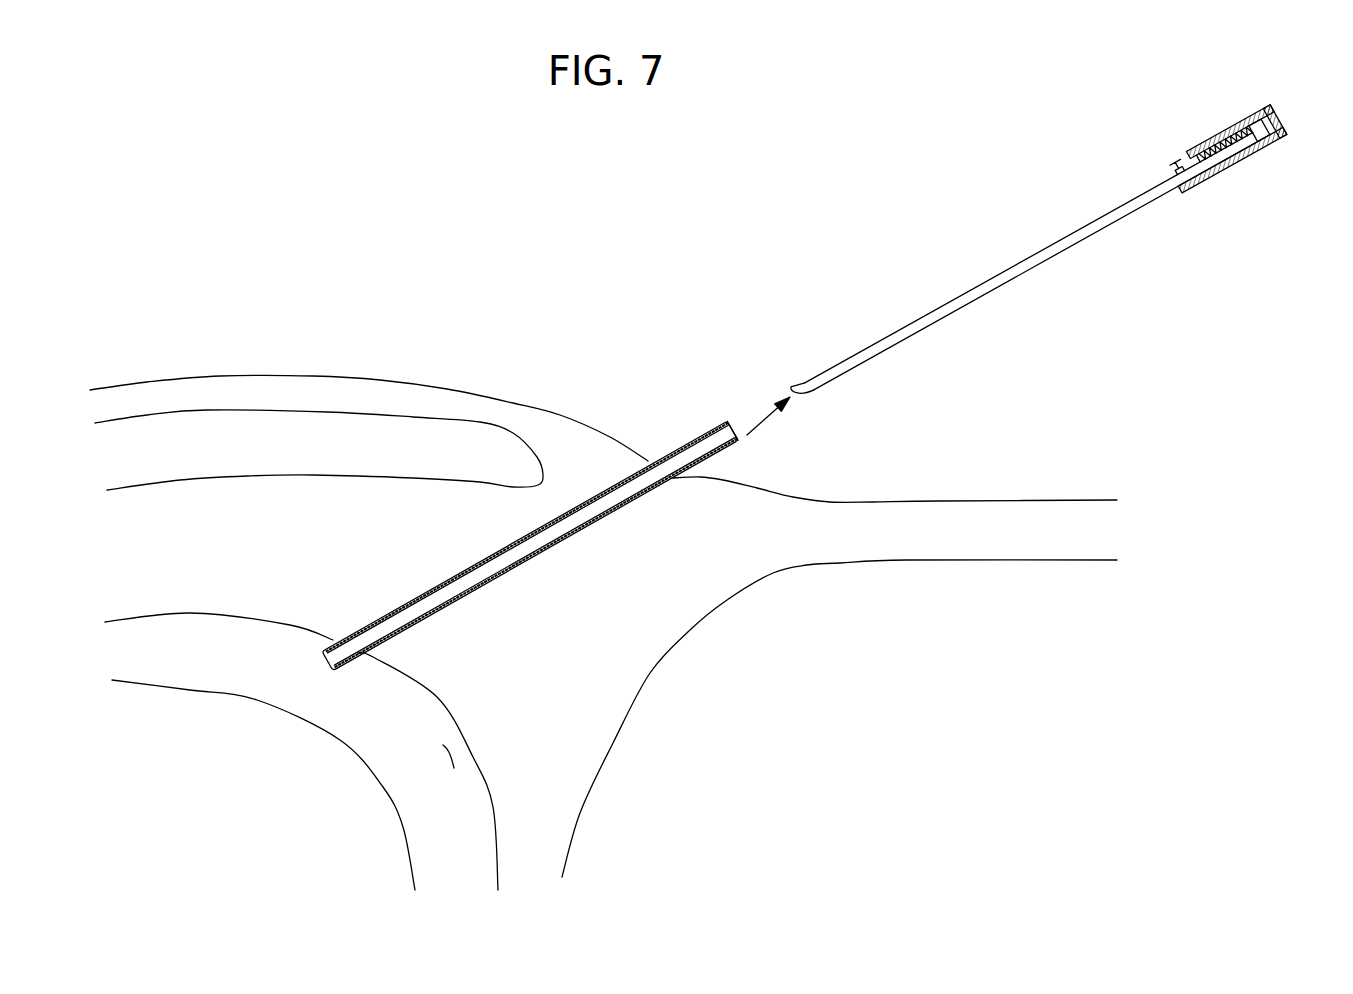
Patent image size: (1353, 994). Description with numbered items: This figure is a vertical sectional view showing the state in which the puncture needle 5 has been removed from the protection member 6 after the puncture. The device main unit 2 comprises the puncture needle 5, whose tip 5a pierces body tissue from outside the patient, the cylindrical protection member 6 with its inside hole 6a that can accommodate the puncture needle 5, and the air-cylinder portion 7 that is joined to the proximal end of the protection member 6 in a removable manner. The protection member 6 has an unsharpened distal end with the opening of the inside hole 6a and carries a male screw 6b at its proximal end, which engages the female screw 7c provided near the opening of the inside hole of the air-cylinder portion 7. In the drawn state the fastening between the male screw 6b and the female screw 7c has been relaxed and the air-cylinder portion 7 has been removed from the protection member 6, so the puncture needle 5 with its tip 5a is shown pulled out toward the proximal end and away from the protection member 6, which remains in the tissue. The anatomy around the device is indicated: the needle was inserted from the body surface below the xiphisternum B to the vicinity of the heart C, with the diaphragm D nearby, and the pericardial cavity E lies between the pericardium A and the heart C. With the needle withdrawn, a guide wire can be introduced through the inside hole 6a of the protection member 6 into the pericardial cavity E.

The device main unit 2 is at (760, 245).
The puncture needle 5 is at (987, 224).
The tip 5a is at (790, 385).
The protection member 6 is at (530, 509).
The inside hole 6a is at (590, 517).
The male screw 6b is at (707, 432).
The air-cylinder portion 7 is at (1181, 150).
The female screw 7c is at (1170, 168).
The pericardium A is at (437, 697).
The xiphisternum B is at (512, 450).
The heart C is at (400, 822).
The diaphragm D is at (650, 673).
The pericardial cavity E is at (457, 770).